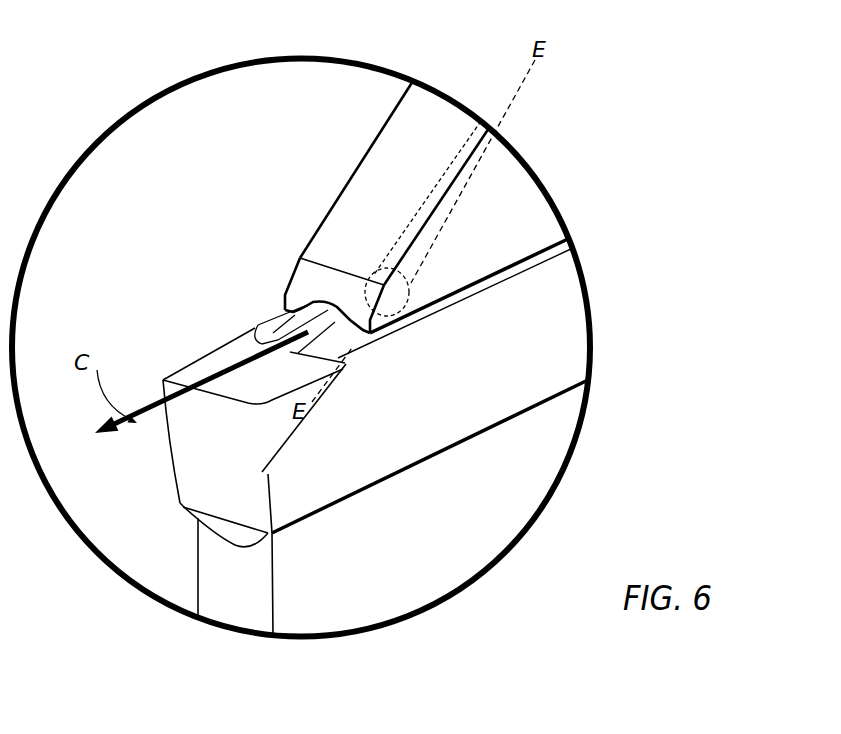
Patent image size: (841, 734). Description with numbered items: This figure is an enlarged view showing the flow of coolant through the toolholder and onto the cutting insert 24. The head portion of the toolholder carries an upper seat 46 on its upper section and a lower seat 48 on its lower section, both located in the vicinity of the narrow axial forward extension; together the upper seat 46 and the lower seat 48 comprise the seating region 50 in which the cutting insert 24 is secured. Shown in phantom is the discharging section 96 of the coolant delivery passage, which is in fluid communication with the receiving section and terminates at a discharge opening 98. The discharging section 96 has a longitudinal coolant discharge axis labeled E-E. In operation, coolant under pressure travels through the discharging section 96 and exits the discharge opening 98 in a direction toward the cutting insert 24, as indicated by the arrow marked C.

The cutting insert 24 is at (363, 448).
The upper seat 46 is at (440, 312).
The lower seat 48 is at (407, 468).
The seating region 50 is at (193, 240).
The discharging section 96 is at (425, 198).
The discharge opening 98 is at (377, 273).